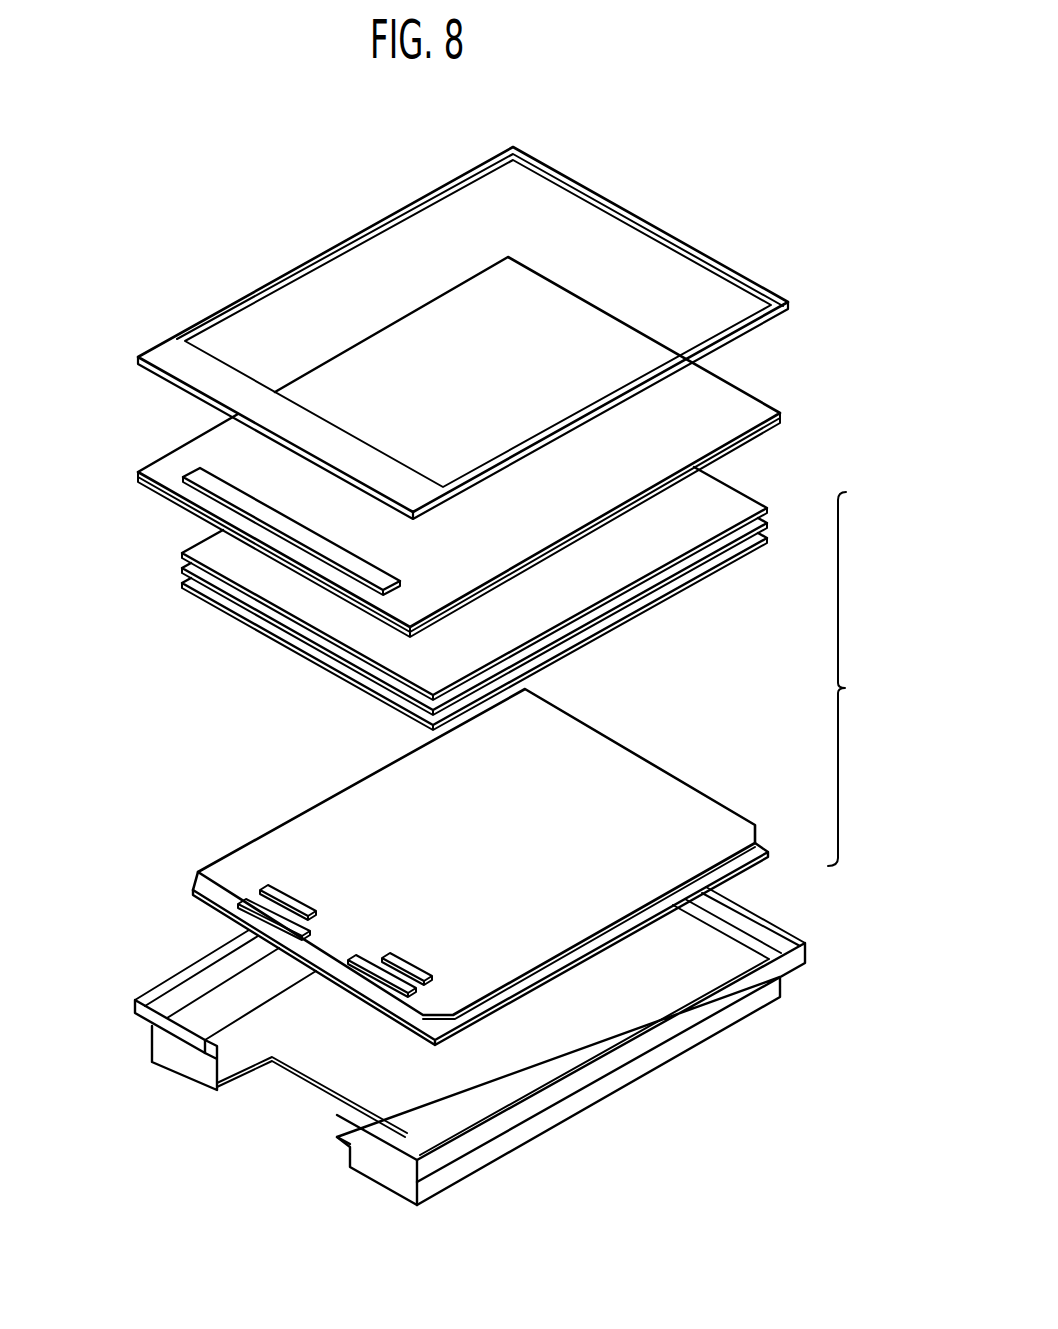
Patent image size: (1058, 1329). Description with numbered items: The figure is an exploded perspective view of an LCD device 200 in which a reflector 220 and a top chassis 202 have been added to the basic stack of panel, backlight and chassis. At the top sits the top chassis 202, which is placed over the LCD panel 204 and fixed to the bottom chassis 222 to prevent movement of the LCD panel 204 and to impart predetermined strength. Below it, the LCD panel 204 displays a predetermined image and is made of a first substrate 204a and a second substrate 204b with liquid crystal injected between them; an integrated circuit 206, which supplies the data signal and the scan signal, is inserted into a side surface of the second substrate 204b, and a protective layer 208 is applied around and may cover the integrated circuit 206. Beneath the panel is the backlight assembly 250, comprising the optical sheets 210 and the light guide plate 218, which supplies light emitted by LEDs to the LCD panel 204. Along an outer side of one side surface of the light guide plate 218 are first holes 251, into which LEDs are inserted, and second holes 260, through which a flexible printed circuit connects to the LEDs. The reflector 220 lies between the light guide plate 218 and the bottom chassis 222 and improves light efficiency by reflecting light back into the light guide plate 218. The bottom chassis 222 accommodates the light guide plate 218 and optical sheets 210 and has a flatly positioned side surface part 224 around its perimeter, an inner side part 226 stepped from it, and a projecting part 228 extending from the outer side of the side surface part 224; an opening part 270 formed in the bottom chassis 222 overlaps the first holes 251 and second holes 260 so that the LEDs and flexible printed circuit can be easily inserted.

The LCD device 200 is at (153, 210).
The top chassis 202 is at (652, 224).
The LCD panel 204 is at (479, 447).
The first substrate 204a is at (782, 409).
The second substrate 204b is at (786, 424).
The integrated circuit 206 is at (188, 468).
The protective layer 208 is at (182, 479).
The optical sheets 210 is at (175, 553).
The light guide plate 218 is at (213, 861).
The reflector 220 is at (190, 893).
The bottom chassis 222 is at (469, 1046).
The side surface part 224 is at (212, 980).
The inner side part 226 is at (450, 1118).
The projecting part 228 is at (132, 1003).
The backlight assembly 250 is at (861, 679).
The first holes 251 is at (292, 897).
The second holes 260 is at (238, 906).
The opening part 270 is at (303, 1100).